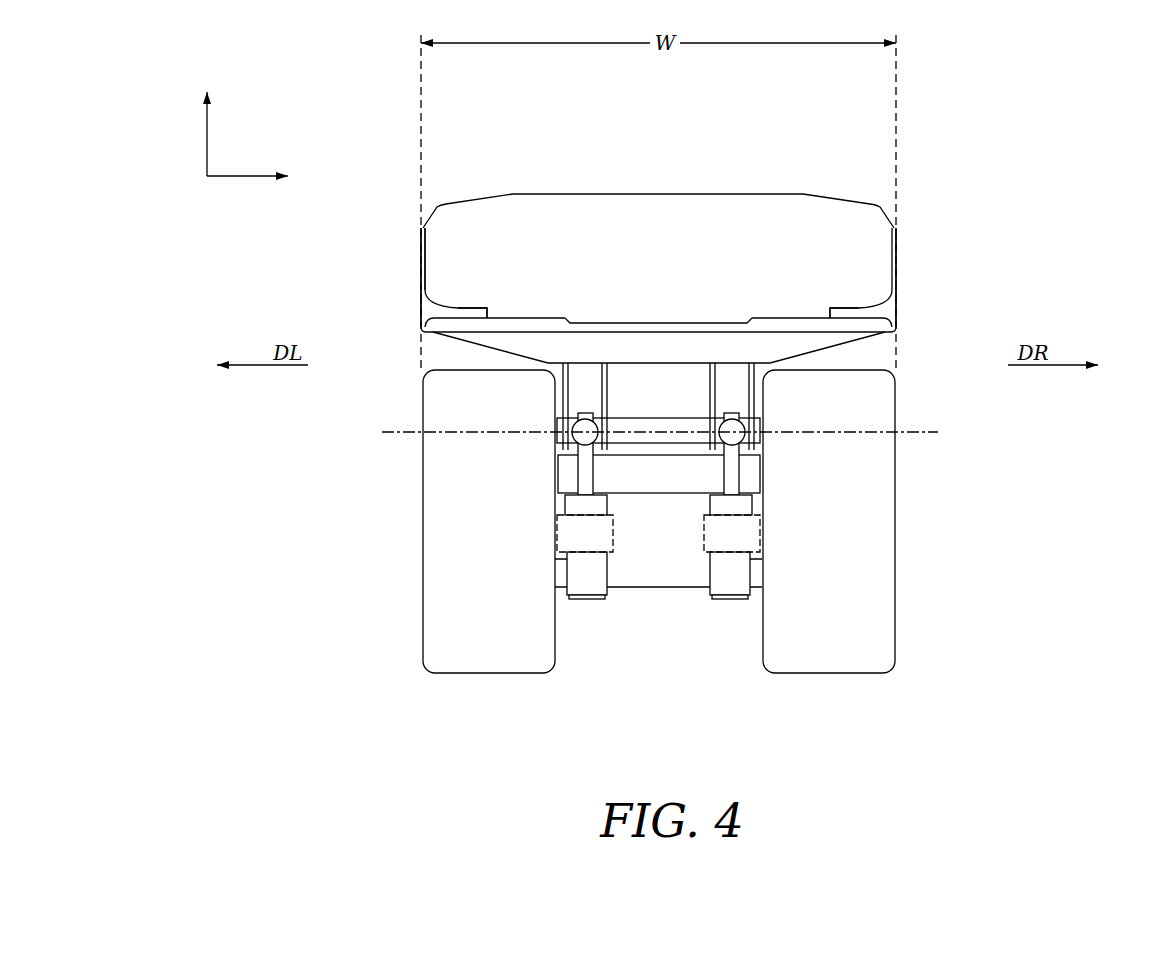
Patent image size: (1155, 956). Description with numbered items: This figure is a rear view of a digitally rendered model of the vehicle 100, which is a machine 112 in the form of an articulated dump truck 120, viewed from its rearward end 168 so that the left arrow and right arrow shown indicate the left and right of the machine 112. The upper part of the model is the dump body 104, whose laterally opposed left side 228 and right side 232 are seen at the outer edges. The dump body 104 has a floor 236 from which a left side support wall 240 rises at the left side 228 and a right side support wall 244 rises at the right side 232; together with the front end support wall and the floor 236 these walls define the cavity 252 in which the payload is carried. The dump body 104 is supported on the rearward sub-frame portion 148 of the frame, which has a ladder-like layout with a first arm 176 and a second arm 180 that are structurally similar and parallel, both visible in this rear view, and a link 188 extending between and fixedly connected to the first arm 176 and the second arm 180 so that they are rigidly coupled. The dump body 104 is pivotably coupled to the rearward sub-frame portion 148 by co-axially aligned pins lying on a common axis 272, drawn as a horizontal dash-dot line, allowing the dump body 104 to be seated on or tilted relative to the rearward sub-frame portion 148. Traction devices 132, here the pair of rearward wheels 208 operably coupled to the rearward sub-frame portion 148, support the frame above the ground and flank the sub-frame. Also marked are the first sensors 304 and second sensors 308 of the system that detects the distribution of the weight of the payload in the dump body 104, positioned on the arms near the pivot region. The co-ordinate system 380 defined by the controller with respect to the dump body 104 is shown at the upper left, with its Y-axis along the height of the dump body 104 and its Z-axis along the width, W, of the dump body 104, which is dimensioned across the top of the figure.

The vehicle 100 is at (1071, 121).
The dump body 104 is at (419, 252).
The machine 112 is at (1034, 181).
The articulated dump truck 120 is at (944, 141).
The traction devices 132 is at (423, 578).
The rearward sub-frame portion 148 is at (637, 493).
The rearward end 168 is at (678, 495).
The first arm 176 is at (577, 573).
The second arm 180 is at (740, 573).
The link 188 is at (622, 493).
The rearward wheels 208 is at (423, 508).
The left side 228 is at (402, 268).
The right side 232 is at (909, 252).
The floor 236 is at (635, 322).
The left side support wall 240 is at (423, 277).
The right side support wall 244 is at (898, 267).
The cavity 252 is at (749, 274).
The common axis 272 is at (938, 432).
The first sensors 304 is at (558, 525).
The second sensors 308 is at (583, 416).
The co-ordinate system 380 is at (294, 121).